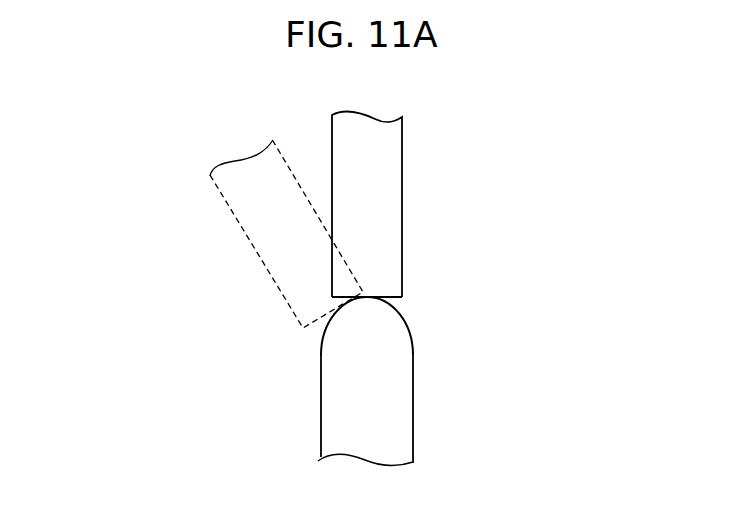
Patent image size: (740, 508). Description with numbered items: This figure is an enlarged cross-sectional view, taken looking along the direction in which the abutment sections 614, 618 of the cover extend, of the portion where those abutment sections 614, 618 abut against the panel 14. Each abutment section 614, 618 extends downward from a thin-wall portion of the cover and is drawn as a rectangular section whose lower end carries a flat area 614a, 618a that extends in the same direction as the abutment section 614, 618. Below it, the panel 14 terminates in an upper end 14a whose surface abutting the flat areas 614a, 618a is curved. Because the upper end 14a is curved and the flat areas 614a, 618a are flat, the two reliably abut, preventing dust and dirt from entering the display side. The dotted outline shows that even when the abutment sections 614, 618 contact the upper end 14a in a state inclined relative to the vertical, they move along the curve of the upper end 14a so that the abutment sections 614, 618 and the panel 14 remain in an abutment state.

The abutment section 614 is at (325, 219).
The abutment section 618 is at (394, 196).
The flat area 614a is at (451, 298).
The flat area 618a is at (396, 298).
The panel 14 is at (413, 381).
The upper end 14a is at (403, 322).